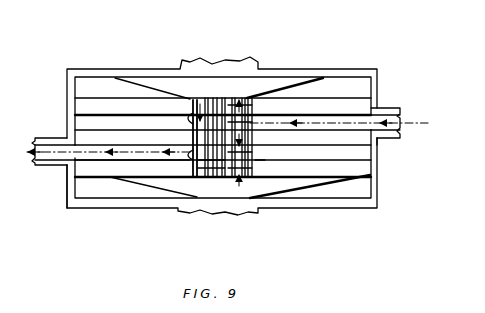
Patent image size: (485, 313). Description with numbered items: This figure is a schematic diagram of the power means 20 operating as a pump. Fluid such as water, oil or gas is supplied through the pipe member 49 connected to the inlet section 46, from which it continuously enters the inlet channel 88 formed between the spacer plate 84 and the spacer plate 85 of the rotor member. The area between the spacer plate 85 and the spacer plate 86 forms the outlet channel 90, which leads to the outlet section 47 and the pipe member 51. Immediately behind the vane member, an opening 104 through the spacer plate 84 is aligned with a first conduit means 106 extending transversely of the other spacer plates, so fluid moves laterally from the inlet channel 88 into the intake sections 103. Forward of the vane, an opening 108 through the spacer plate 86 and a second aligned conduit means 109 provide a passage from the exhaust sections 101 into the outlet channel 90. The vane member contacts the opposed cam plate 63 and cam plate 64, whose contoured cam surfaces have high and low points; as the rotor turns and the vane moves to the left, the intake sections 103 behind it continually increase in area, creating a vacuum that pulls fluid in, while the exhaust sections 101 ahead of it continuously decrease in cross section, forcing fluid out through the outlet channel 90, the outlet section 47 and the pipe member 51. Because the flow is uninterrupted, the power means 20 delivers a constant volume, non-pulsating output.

The power means 20 is at (310, 61).
The inlet section 46 is at (390, 108).
The outlet section 47 is at (68, 170).
The pipe member 49 is at (392, 140).
The pipe member 51 is at (48, 140).
The cam plate 63 is at (263, 88).
The cam plate 64 is at (338, 187).
The spacer plate 84 is at (352, 110).
The spacer plate 85 is at (368, 133).
The spacer plate 86 is at (360, 177).
The inlet channel 88 is at (382, 140).
The outlet channel 90 is at (138, 153).
The exhaust section 101 is at (122, 92).
The intake section 103 is at (366, 74).
The opening 104 is at (240, 100).
The first conduit means 106 is at (260, 158).
The opening 108 is at (197, 165).
The second conduit means 109 is at (193, 100).